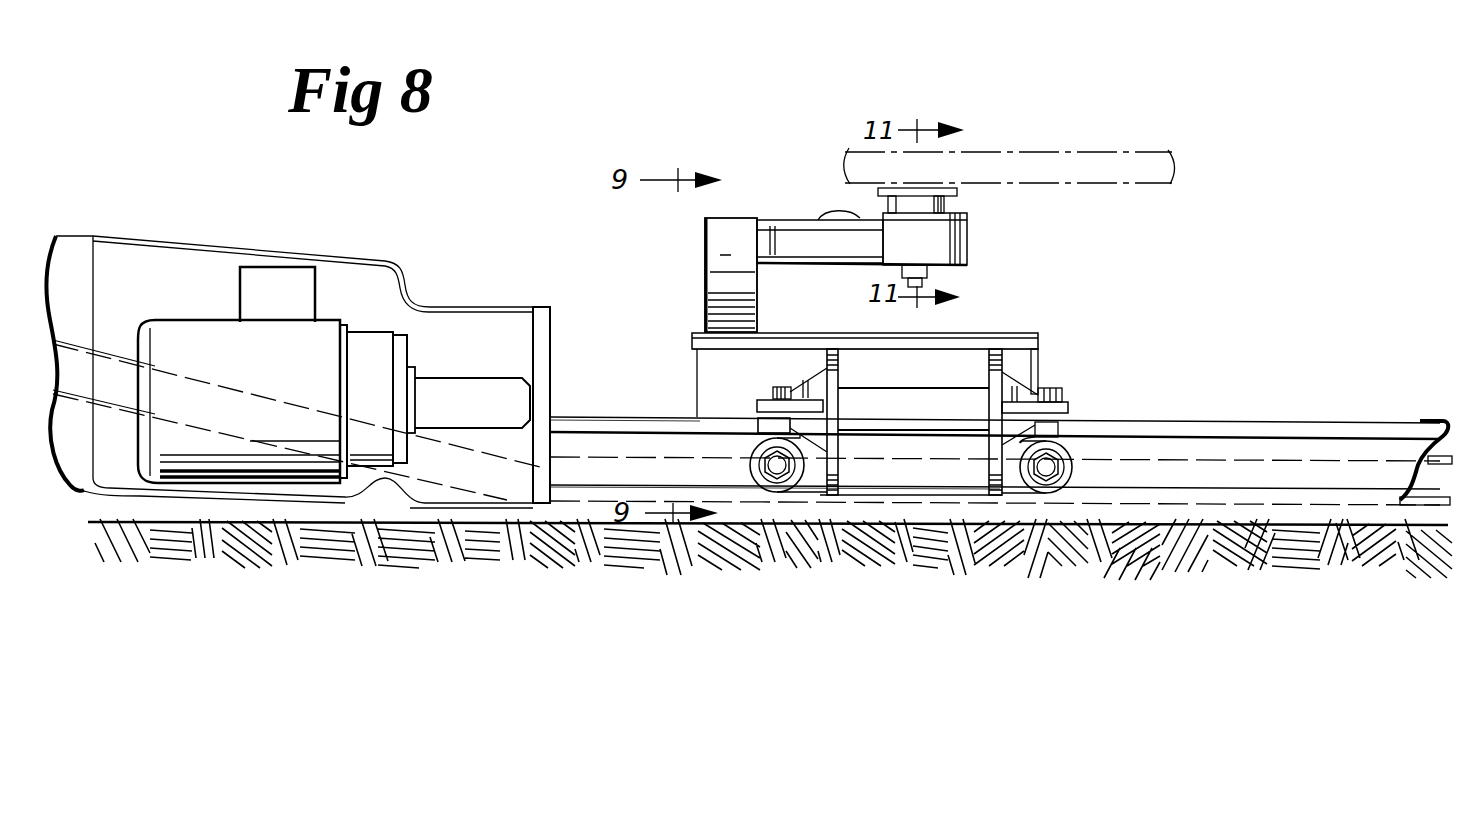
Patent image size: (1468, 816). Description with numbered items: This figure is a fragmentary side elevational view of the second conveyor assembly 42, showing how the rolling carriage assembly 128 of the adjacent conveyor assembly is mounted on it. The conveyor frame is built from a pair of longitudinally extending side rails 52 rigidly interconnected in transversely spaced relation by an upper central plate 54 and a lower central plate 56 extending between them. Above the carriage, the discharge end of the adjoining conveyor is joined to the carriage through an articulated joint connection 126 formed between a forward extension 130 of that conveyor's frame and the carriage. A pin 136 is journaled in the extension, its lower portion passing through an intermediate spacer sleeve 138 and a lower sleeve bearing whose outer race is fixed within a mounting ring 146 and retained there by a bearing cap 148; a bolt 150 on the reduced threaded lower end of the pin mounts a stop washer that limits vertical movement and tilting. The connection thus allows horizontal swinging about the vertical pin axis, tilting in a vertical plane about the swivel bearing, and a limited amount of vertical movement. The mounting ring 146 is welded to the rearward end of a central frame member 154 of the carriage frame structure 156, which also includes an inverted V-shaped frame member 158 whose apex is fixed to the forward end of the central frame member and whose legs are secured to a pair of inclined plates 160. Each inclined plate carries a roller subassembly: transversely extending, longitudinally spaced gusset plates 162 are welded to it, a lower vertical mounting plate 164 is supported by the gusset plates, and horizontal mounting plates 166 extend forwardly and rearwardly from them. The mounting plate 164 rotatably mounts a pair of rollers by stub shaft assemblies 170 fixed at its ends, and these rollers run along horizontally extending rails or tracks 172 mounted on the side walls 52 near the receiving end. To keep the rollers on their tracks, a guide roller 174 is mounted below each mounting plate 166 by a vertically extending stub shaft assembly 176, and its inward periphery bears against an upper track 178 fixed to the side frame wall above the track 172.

The second conveyor assembly 42 is at (1328, 396).
The side rails 52 is at (1243, 440).
The upper central plate 54 is at (1425, 432).
The lower central plate 56 is at (1427, 503).
The articulated joint connection 126 is at (954, 207).
The carriage assembly 128 is at (1068, 312).
The forward extension 130 is at (1131, 152).
The pin 136 is at (928, 281).
The intermediate spacer sleeve 138 is at (905, 205).
The mounting ring 146 is at (966, 232).
The bearing cap 148 is at (872, 212).
The bolt 150 is at (934, 264).
The central frame member 154 is at (827, 245).
The frame structure 156 is at (698, 229).
The inverted V-shaped frame member 158 is at (705, 312).
The inclined plates 160 is at (697, 345).
The gusset plates 162 is at (989, 378).
The lower mounting plate 164 is at (895, 473).
The horizontal mounting plates 166 is at (757, 405).
The stub shaft assemblies 170 is at (1046, 467).
The rails or tracks 172 is at (727, 493).
The guide roller 174 is at (1035, 428).
The vertically extending stub shaft assembly 176 is at (768, 389).
The track 178 is at (608, 425).